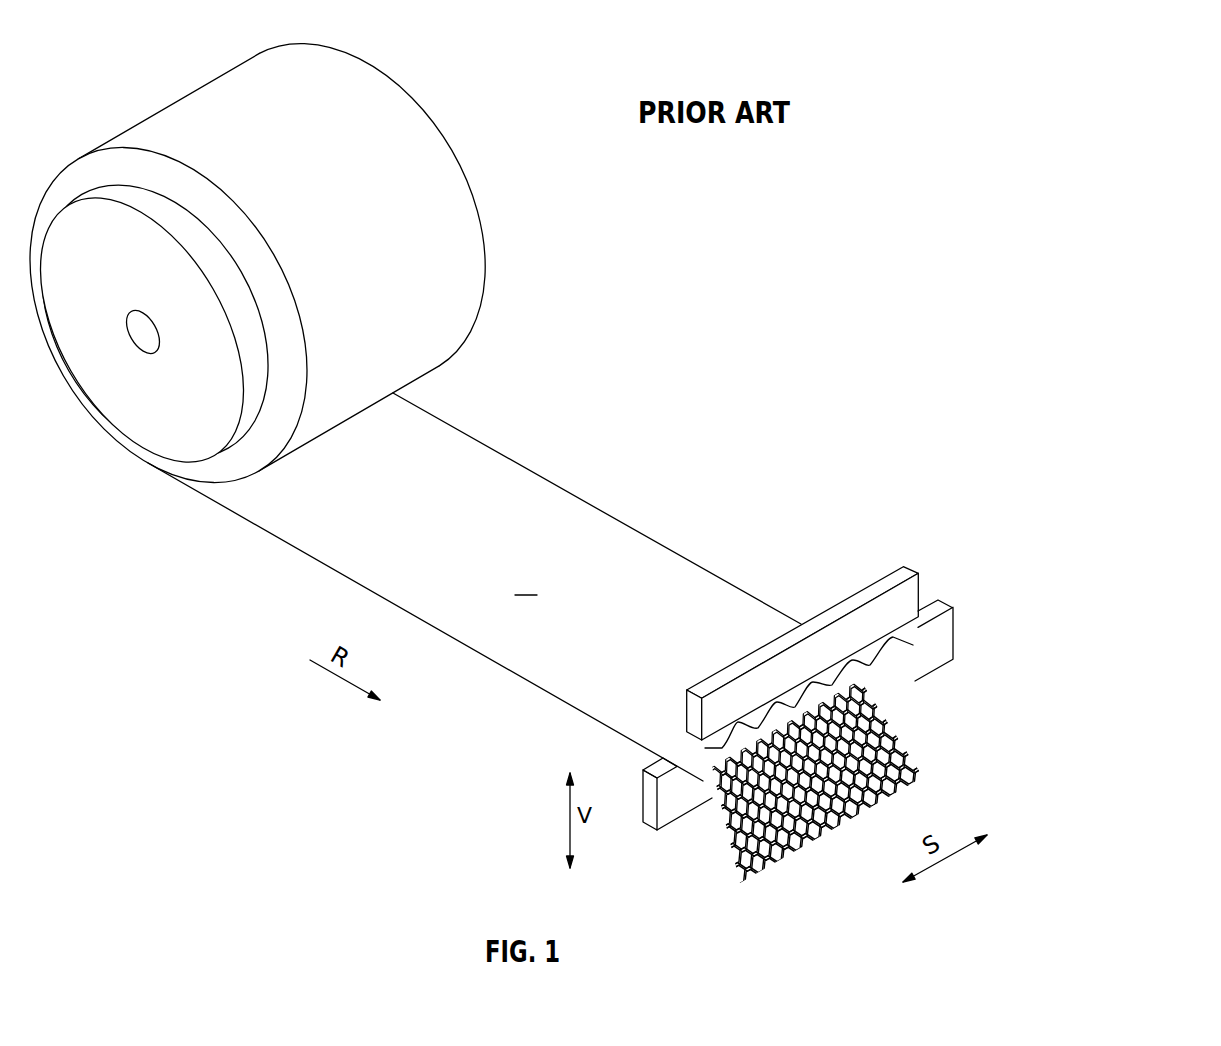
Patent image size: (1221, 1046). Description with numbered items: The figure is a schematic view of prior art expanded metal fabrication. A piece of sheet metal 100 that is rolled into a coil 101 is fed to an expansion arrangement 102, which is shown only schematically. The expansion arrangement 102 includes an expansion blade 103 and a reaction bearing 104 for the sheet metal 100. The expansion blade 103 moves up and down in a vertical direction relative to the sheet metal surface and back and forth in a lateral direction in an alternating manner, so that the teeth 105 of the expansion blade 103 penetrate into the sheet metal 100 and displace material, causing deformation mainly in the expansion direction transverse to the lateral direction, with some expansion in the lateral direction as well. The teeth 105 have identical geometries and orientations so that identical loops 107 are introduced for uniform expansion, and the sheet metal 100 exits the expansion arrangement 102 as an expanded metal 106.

The sheet metal 100 is at (540, 517).
The coil 101 is at (452, 233).
The expansion arrangement 102 is at (892, 668).
The expansion blade 103 is at (893, 583).
The reaction bearing 104 is at (940, 633).
The teeth 105 is at (923, 651).
The expanded metal 106 is at (893, 773).
The loops 107 is at (902, 775).